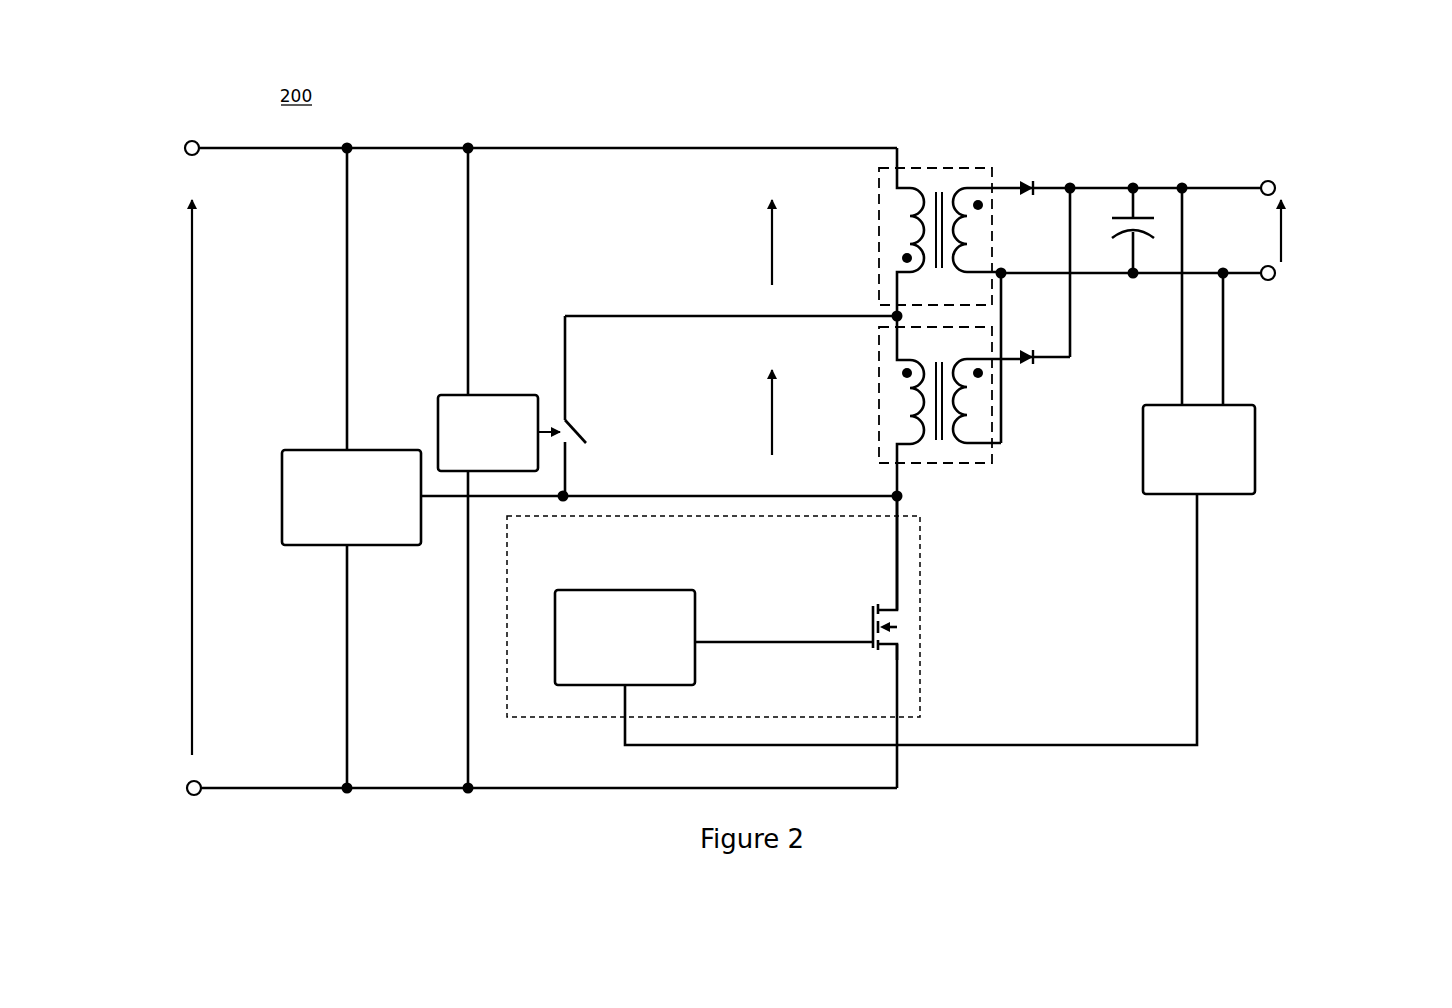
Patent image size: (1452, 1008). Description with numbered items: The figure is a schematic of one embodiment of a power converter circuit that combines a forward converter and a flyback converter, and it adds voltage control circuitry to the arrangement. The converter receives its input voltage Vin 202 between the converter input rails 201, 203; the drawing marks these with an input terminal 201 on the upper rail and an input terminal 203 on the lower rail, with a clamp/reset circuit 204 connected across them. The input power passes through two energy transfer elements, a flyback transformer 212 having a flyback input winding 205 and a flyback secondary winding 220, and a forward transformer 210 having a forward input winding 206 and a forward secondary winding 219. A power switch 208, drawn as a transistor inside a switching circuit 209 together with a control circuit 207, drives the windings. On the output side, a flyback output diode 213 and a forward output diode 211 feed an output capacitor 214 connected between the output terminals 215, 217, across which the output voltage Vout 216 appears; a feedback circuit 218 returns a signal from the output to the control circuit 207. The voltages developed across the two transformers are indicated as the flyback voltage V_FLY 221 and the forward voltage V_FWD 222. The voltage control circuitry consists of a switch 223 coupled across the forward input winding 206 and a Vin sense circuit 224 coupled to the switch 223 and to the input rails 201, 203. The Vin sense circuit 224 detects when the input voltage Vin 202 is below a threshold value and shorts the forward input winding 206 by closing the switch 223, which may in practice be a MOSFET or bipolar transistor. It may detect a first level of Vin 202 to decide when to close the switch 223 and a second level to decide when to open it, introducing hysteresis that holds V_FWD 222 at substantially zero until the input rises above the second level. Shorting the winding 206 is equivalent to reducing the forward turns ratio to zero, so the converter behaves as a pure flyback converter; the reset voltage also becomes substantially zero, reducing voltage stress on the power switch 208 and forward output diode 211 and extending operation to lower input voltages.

The converter input rail 201 is at (207, 162).
The input voltage Vin 202 is at (150, 450).
The converter input rail 203 is at (183, 788).
The clamp/reset circuit 204 is at (300, 450).
The flyback input winding 205 is at (880, 235).
The forward input winding 206 is at (880, 405).
The control circuit 207 is at (580, 690).
The power switch 208 is at (905, 648).
The switching circuit 209 is at (746, 632).
The forward transformer 210 is at (954, 423).
The forward output diode 211 is at (1027, 375).
The flyback transformer 212 is at (911, 198).
The flyback rectifier diode 213 is at (1035, 180).
The output capacitor 214 is at (1140, 208).
The first output terminal 215 is at (1280, 180).
The output voltage Vout 216 is at (1378, 226).
The second output terminal 217 is at (1288, 275).
The feedback circuit 218 is at (1228, 506).
The forward transformer secondary winding 219 is at (1003, 420).
The flyback transformer secondary winding 220 is at (985, 205).
The flyback voltage V_FLY 221 is at (717, 243).
The forward voltage V_FWD 222 is at (717, 415).
The switch 223 is at (575, 420).
The Vin sense circuit 224 is at (462, 392).